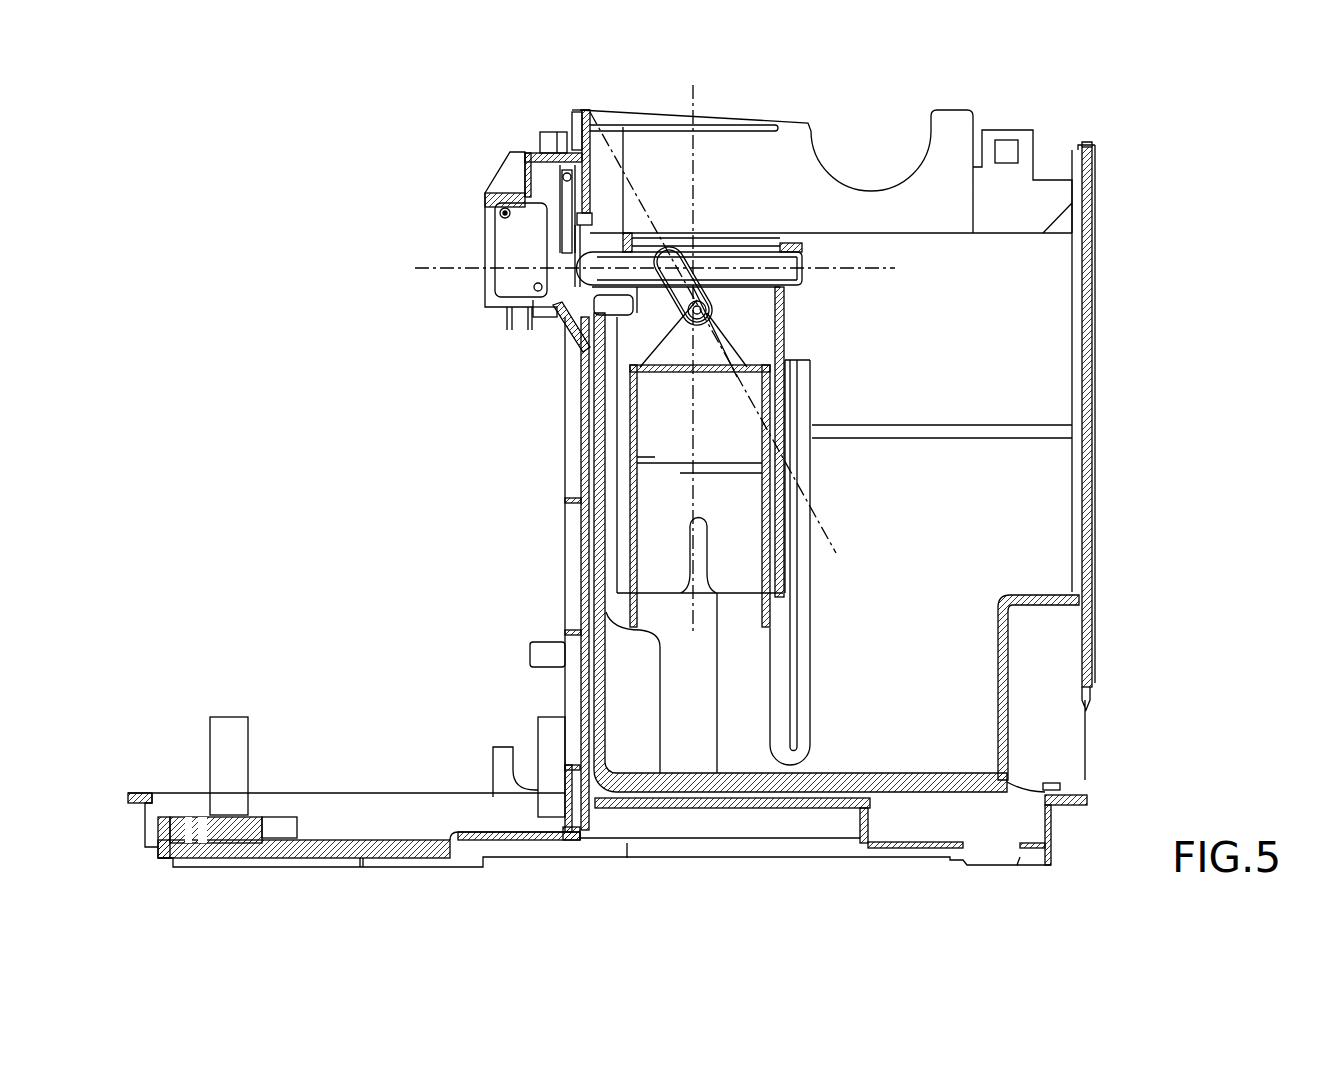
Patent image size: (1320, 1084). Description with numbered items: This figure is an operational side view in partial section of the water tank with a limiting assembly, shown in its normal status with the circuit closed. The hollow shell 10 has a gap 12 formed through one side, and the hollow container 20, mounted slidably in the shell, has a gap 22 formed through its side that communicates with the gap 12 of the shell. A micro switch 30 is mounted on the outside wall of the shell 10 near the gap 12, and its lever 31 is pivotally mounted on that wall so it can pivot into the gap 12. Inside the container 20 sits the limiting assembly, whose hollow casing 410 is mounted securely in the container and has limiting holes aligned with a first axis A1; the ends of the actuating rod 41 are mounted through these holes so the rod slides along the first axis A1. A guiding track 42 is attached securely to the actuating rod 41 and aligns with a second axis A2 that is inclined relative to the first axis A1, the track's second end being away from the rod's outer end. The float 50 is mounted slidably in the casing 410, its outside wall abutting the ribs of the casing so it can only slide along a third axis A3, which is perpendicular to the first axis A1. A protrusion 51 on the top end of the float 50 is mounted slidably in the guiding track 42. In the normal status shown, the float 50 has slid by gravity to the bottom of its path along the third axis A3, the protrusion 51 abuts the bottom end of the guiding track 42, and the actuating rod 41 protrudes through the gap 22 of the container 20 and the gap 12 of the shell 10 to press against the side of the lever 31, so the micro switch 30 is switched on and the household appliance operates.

The shell 10 is at (581, 540).
The gap 12 is at (560, 240).
The container 20 is at (1097, 310).
The gap 22 is at (557, 315).
The micro switch 30 is at (523, 210).
The lever 31 is at (565, 197).
The actuating rod 41 is at (748, 263).
The guiding track 42 is at (800, 288).
The float 50 is at (652, 448).
The protrusion 51 is at (718, 312).
The casing 410 is at (783, 543).
The first axis A1 is at (679, 269).
The second axis A2 is at (590, 112).
The third axis A3 is at (696, 342).